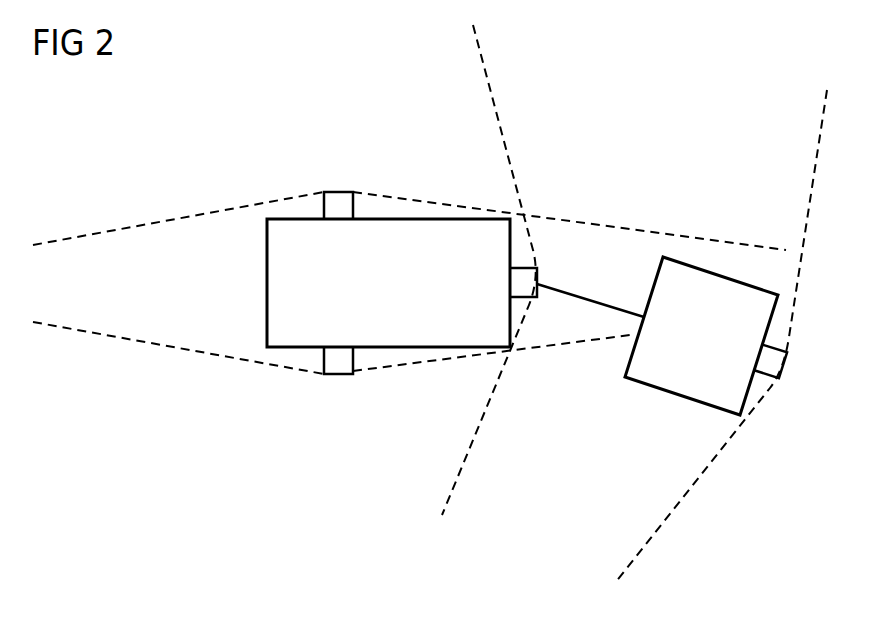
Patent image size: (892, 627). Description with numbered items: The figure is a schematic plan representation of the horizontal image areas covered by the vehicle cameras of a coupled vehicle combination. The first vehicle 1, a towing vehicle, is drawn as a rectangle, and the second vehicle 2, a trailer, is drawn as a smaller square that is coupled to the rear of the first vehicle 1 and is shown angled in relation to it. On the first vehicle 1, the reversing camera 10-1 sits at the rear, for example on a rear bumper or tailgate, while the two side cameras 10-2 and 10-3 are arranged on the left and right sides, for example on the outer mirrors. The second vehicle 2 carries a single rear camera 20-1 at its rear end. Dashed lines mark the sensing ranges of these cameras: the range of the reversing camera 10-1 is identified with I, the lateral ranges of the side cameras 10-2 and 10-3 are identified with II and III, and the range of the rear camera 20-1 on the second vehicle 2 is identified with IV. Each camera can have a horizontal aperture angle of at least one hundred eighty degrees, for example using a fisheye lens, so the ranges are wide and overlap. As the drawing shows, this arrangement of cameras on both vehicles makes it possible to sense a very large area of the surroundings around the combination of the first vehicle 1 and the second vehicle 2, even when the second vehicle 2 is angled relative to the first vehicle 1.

The first vehicle 1 is at (266, 282).
The second vehicle 2 is at (682, 397).
The reversing camera 10-1 is at (524, 277).
The side camera 10-2 is at (336, 206).
The side camera 10-3 is at (337, 366).
The rear camera 20-1 is at (777, 358).
The sensing range of the rear camera I is at (491, 98).
The lateral sensing range II is at (597, 224).
The lateral sensing range III is at (177, 347).
The sensing range of the rear camera IV is at (815, 162).